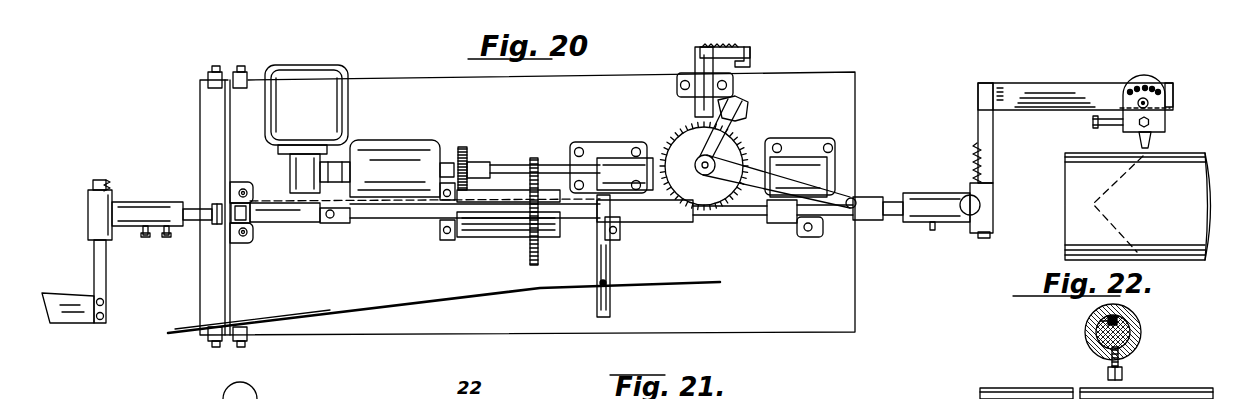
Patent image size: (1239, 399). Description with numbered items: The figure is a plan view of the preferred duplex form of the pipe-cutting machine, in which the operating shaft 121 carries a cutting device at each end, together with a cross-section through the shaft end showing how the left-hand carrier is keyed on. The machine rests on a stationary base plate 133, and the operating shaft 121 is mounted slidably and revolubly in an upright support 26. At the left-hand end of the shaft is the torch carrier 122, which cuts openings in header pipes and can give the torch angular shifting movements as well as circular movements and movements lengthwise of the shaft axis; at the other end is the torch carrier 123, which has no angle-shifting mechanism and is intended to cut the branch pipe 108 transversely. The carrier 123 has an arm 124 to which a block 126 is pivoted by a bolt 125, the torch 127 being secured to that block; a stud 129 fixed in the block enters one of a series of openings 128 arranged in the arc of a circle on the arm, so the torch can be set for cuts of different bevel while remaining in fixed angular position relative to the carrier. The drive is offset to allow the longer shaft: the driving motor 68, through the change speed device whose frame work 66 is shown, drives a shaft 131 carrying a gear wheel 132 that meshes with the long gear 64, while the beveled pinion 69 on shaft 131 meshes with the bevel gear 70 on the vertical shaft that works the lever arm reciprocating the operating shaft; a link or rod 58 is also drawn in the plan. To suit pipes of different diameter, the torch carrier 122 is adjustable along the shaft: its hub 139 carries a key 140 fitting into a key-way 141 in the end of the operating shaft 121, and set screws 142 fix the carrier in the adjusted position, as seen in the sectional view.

In FIG. 20, the upright support 26 is at (227, 69).
In FIG. 20, the rod 58 is at (708, 283).
In FIG. 20, the long gear 64 is at (482, 226).
In FIG. 20, the frame work of change speed device 66 is at (406, 152).
In FIG. 20, the driving motor 68 is at (316, 76).
In FIG. 20, the beveled pinion 69 is at (662, 150).
In FIG. 20, the bevel gear 70 is at (692, 129).
In FIG. 20, the branch pipe 108 is at (1073, 178).
In FIG. 21, the branch pipe 108 is at (1033, 377).
In FIG. 20, the operating shaft 121 is at (405, 222).
In FIG. 22, the operating shaft 121 is at (1143, 331).
In FIG. 20, the torch carrier 122 is at (143, 284).
In FIG. 20, the torch carrier 123 is at (992, 183).
In FIG. 20, the arm 124 is at (1045, 76).
In FIG. 20, the bolt 125 is at (1166, 106).
In FIG. 20, the block 126 is at (1168, 130).
In FIG. 20, the torch 127 is at (1140, 138).
In FIG. 20, the openings 128 is at (1160, 88).
In FIG. 20, the stud 129 is at (1143, 86).
In FIG. 20, the shaft 131 is at (503, 163).
In FIG. 20, the gear wheel 132 is at (471, 138).
In FIG. 20, the base plate 133 is at (815, 67).
In FIG. 20, the hub 139 is at (186, 192).
In FIG. 22, the hub 139 is at (1141, 343).
In FIG. 22, the key 140 is at (1126, 318).
In FIG. 22, the key-way 141 is at (1100, 321).
In FIG. 20, the set screws 142 is at (166, 237).
In FIG. 22, the set screws 142 is at (1122, 373).